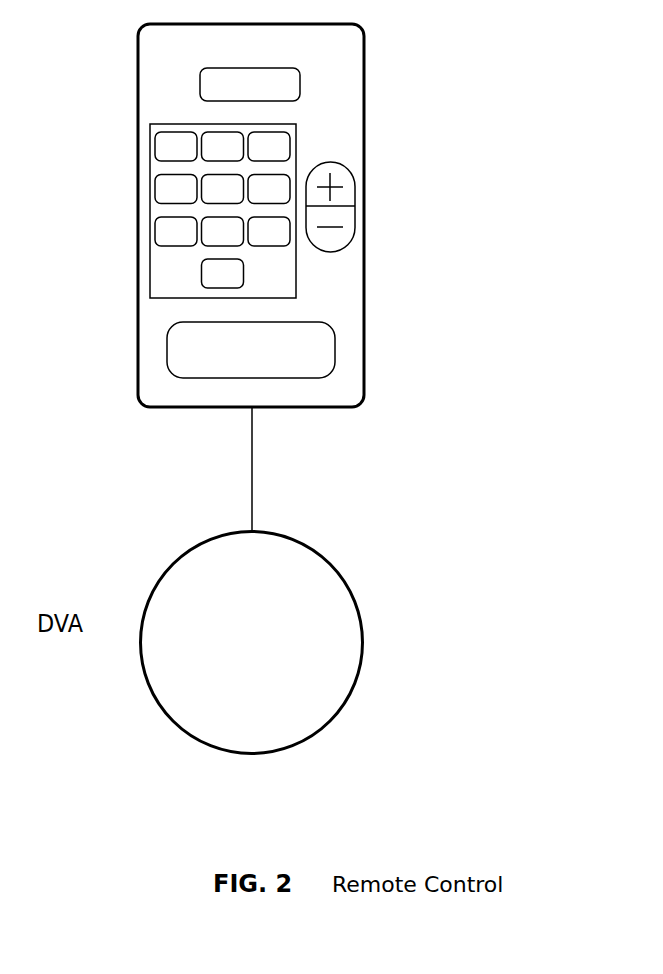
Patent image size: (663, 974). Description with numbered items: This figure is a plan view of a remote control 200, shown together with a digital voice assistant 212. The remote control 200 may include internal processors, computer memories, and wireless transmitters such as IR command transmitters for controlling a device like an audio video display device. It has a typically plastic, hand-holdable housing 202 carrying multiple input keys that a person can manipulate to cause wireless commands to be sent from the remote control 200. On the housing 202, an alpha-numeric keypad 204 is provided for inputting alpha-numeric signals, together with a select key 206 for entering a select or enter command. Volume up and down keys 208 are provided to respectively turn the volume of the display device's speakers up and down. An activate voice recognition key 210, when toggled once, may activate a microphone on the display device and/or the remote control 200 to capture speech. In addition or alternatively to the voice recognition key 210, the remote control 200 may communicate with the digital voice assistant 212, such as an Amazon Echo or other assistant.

The remote control 200 is at (448, 122).
The housing 202 is at (355, 60).
The alpha-numeric keypad 204 is at (150, 165).
The select key 206 is at (202, 80).
The volume up and down keys 208 is at (355, 193).
The activate voice recognition key 210 is at (337, 345).
The digital voice assistant 212 is at (325, 557).